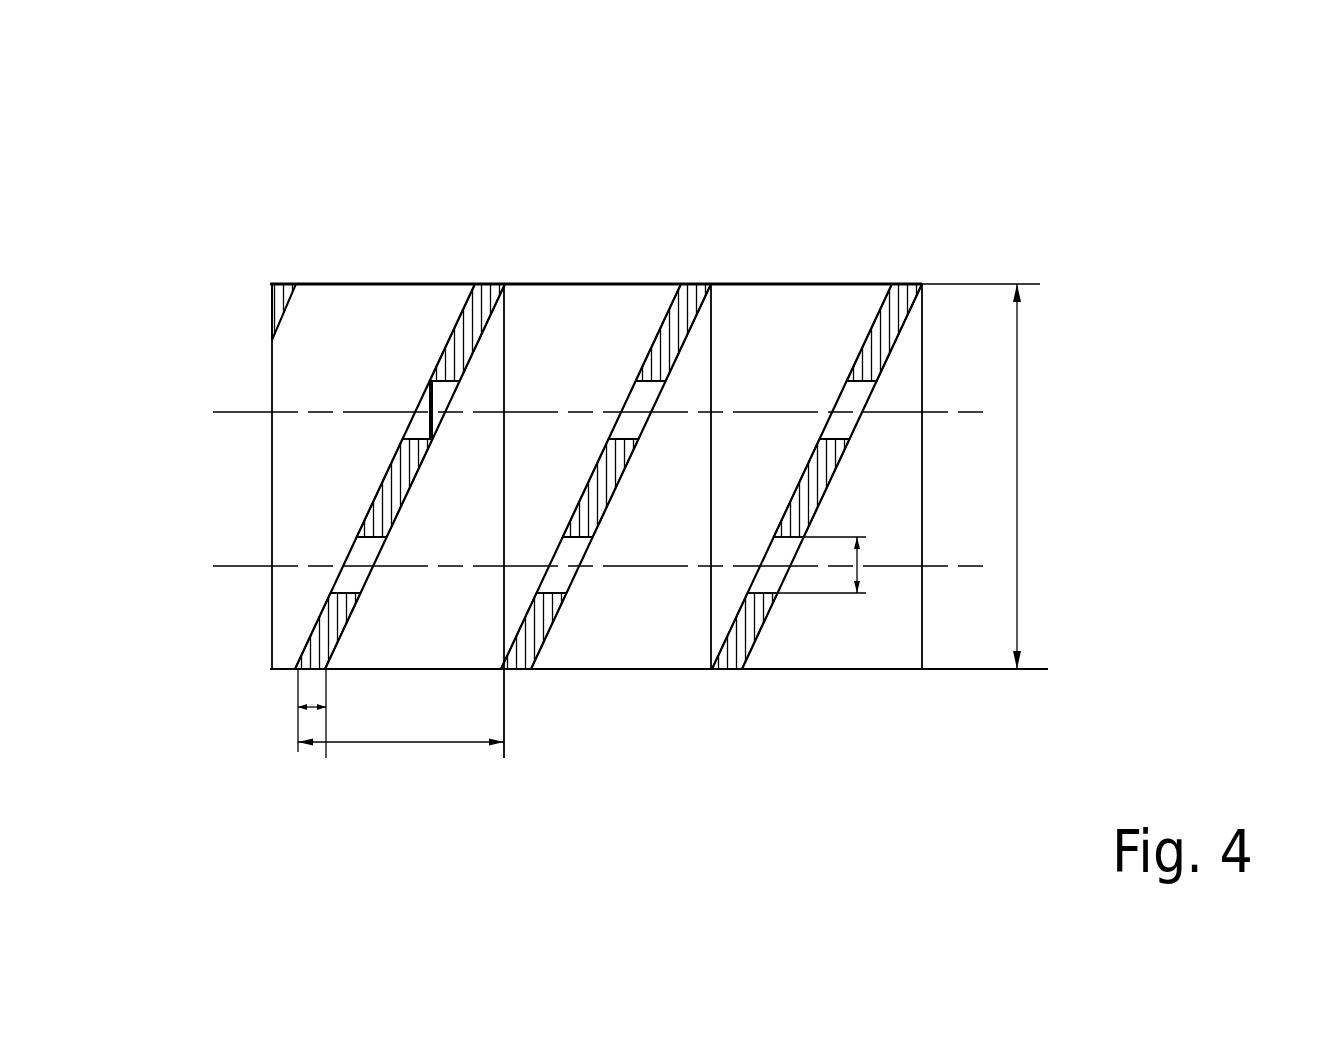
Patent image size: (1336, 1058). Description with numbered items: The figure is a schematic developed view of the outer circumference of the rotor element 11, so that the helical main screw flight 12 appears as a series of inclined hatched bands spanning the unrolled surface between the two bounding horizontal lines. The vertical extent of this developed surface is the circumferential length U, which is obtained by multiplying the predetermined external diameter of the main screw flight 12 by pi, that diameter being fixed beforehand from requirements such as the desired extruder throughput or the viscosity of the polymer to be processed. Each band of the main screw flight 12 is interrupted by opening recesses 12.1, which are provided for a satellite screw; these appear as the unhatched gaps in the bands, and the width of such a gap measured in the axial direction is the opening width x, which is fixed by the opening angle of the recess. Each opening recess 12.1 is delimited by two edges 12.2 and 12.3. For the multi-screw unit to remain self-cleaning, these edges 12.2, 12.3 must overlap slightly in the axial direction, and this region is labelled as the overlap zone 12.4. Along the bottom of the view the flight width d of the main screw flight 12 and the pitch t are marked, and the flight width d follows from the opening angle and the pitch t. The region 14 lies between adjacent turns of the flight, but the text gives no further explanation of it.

The rotor element 11 is at (390, 284).
The land between grooves 14 is at (545, 437).
The main screw flight 12 is at (685, 284).
The opening recess 12.1 is at (628, 413).
The edge 12.2 is at (388, 537).
The edge 12.3 is at (342, 593).
The overlap zone 12.4 is at (431, 388).
The length of the circumference U is at (1025, 464).
The opening width x is at (866, 575).
The flight width d is at (308, 702).
The pitch t is at (396, 742).